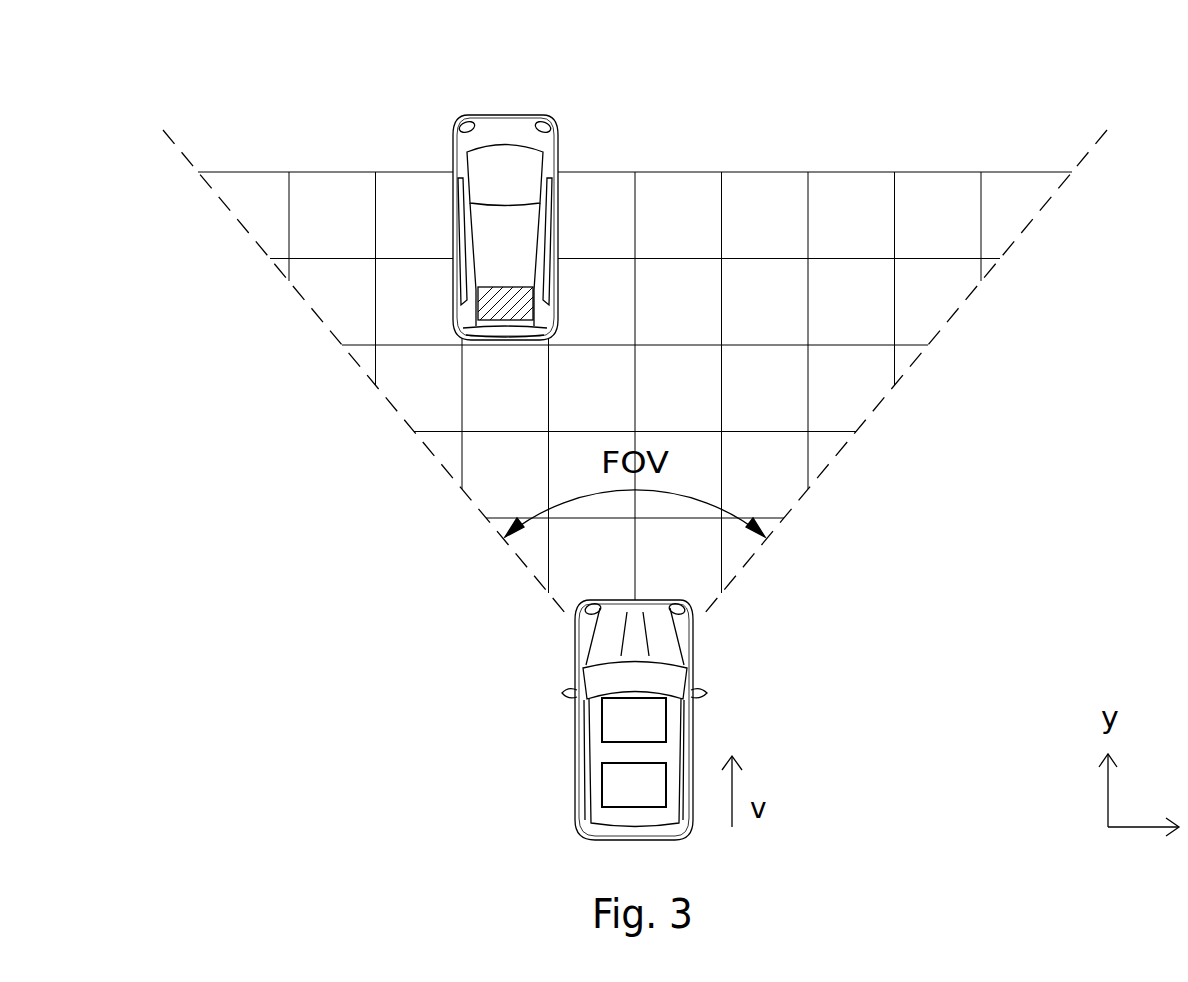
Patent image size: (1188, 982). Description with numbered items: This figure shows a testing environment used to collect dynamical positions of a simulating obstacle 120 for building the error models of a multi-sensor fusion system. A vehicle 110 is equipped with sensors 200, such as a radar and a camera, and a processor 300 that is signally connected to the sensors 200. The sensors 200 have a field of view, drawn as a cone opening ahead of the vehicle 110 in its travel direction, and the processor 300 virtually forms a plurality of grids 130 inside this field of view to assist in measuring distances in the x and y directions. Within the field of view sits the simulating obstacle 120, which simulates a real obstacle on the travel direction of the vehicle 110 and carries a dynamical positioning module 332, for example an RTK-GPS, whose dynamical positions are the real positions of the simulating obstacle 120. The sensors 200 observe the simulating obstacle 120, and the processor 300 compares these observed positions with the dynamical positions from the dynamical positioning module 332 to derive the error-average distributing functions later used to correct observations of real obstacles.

The vehicle 110 is at (697, 661).
The simulating obstacle 120 is at (503, 160).
The grids 130 is at (858, 172).
The sensors 200 is at (602, 718).
The processor 300 is at (602, 783).
The dynamical positioning module 332 is at (493, 307).